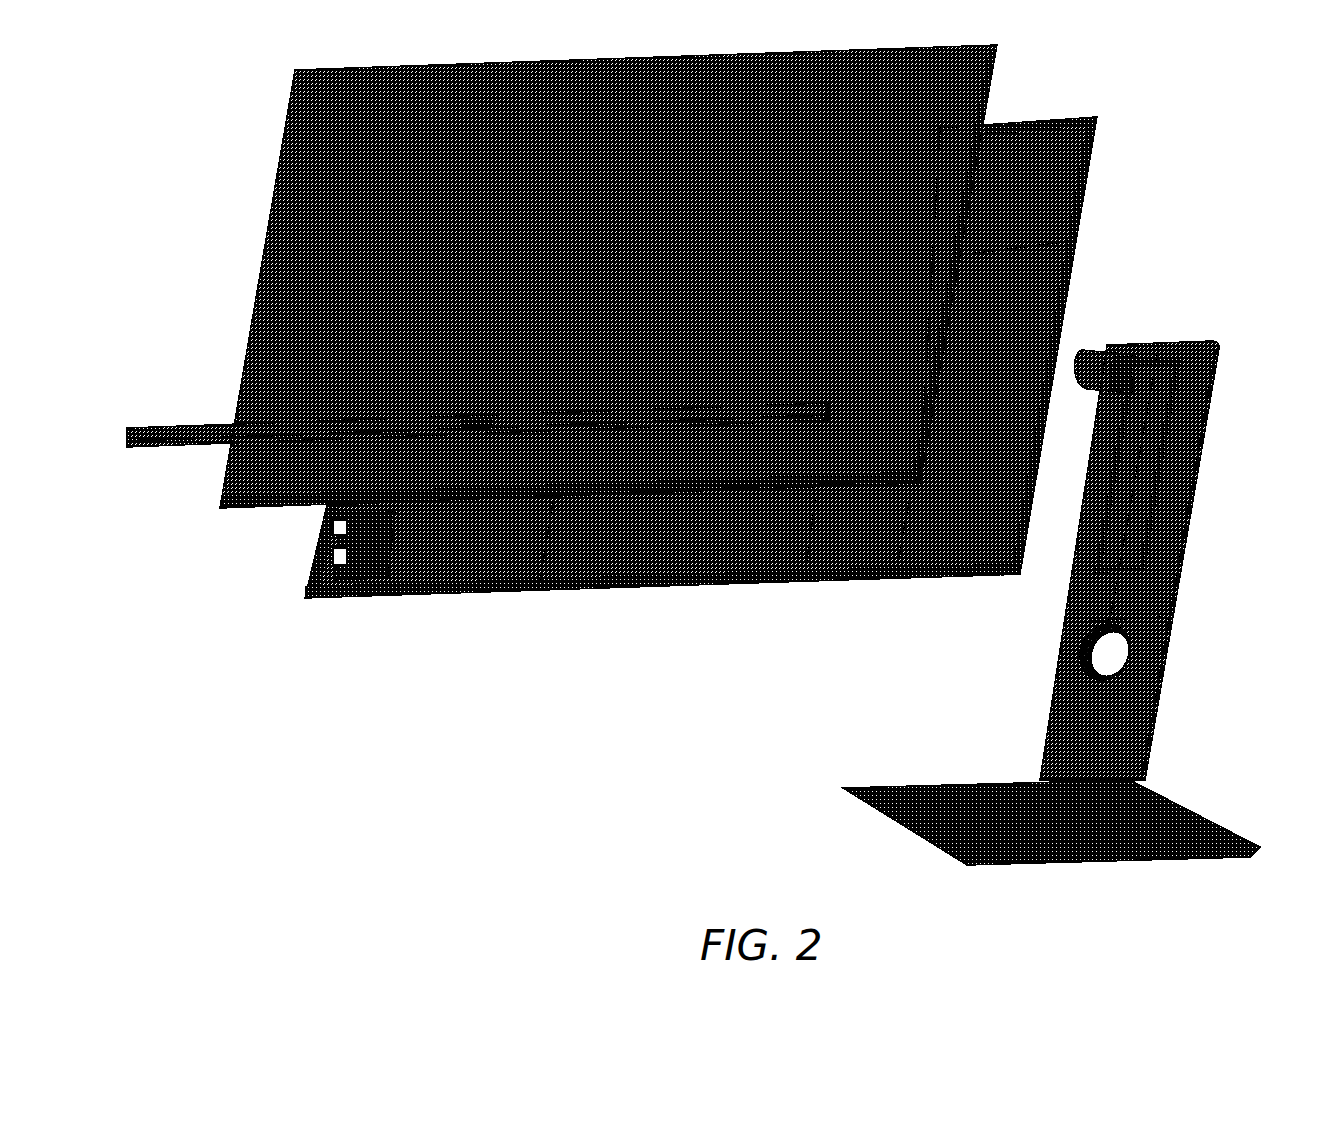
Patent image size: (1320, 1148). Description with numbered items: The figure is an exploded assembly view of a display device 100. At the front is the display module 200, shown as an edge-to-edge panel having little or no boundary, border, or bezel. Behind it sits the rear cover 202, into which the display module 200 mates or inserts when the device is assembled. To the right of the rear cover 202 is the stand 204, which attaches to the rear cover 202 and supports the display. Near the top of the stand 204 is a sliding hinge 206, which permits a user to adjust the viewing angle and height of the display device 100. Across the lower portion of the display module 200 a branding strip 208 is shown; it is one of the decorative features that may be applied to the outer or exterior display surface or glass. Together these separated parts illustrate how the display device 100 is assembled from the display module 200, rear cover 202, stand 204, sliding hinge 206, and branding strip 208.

The display device 100 is at (705, 455).
The display module 200 is at (278, 160).
The rear cover 202 is at (1100, 170).
The stand 204 is at (1212, 450).
The sliding hinge 206 is at (1108, 350).
The branding strip 208 is at (165, 447).